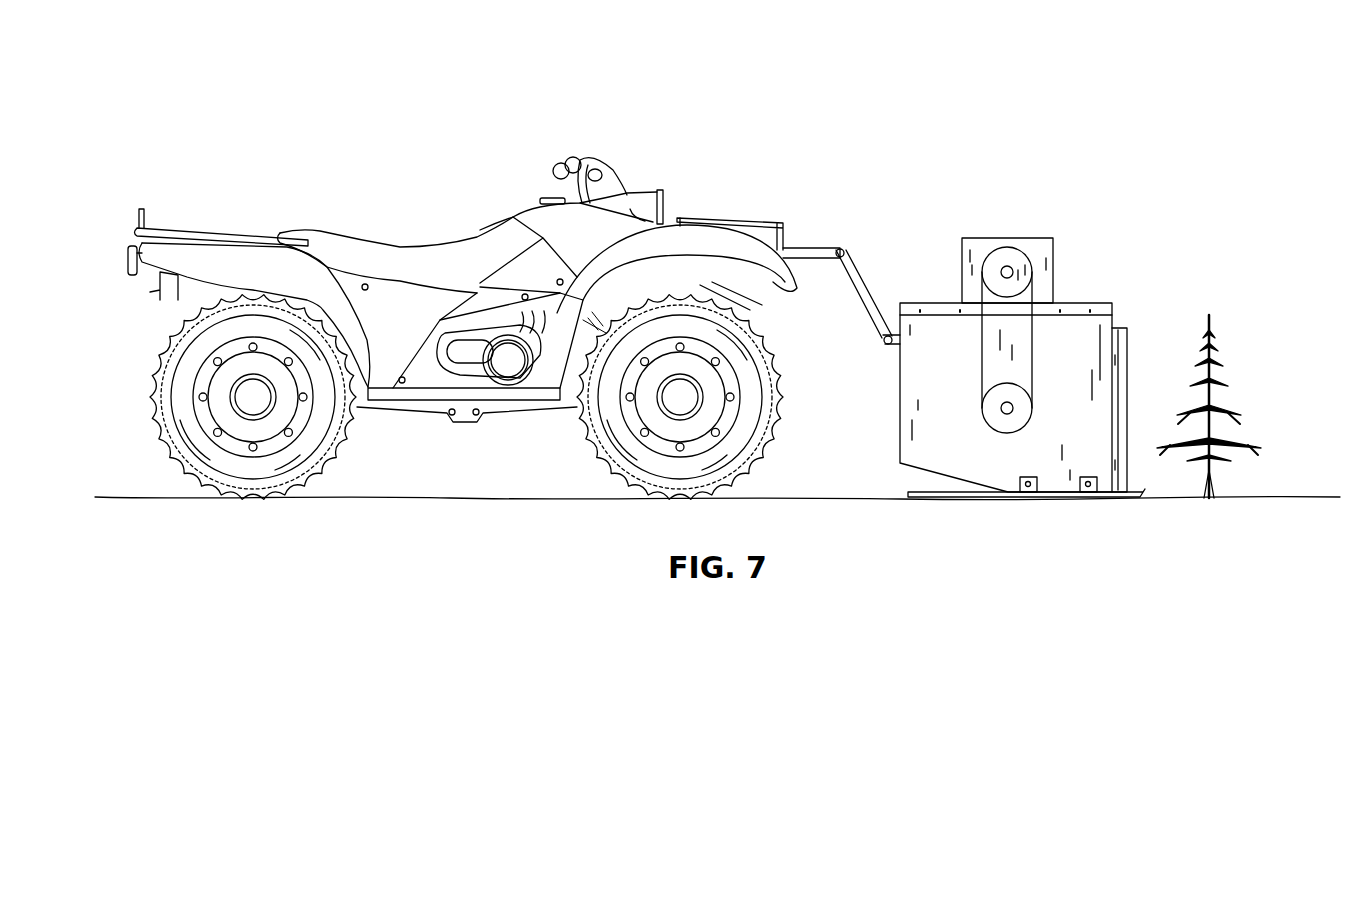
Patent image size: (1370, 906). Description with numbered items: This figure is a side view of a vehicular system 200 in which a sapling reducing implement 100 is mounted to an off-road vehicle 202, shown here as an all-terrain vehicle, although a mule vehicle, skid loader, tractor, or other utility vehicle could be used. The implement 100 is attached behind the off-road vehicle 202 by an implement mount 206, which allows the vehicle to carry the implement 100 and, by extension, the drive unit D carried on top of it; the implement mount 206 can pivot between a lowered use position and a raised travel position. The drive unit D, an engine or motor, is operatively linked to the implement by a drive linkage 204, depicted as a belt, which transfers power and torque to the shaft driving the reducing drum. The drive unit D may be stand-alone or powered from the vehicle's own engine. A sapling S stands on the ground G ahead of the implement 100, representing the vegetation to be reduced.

The vehicular system 200 is at (514, 265).
The off-road vehicle 202 is at (400, 243).
The drive linkage 204 is at (980, 340).
The implement mount 206 is at (862, 307).
The sapling reducing implement 100 is at (1064, 340).
The drive unit D is at (1038, 248).
The seedling S is at (1217, 338).
The ground G is at (1283, 484).